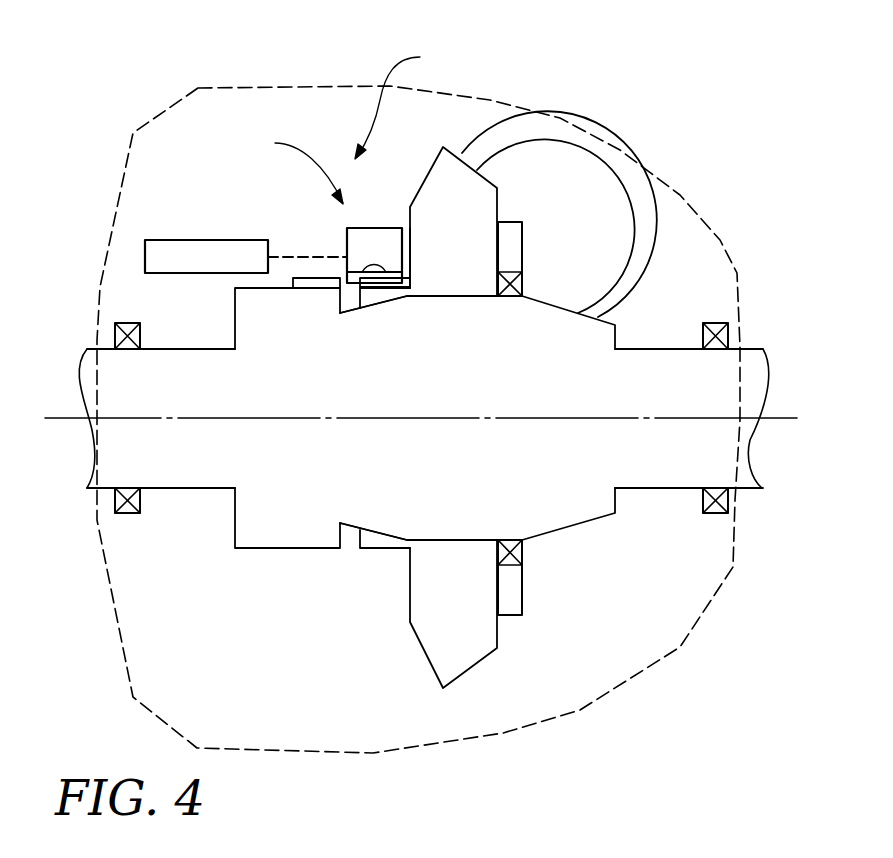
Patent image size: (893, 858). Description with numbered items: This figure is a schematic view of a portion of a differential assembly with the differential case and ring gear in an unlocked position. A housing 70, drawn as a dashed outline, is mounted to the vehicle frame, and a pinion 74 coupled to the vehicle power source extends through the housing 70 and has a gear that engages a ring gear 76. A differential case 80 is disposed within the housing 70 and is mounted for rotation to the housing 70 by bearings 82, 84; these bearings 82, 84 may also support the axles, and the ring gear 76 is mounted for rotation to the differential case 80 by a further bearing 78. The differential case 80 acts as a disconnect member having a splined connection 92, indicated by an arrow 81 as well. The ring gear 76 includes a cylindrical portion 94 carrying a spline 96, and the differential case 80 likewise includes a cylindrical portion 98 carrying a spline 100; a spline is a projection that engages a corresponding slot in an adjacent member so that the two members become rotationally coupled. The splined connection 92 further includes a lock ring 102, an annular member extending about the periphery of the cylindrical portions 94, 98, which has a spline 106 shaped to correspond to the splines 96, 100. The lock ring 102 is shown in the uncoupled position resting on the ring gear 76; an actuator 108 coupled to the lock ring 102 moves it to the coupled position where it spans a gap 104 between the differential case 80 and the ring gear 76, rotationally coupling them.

The housing 70 is at (295, 85).
The pinion 74 is at (590, 166).
The ring gear 76 is at (425, 655).
The bearing 78 is at (525, 555).
The differential case 80 is at (572, 525).
The direction arrow 81 is at (406, 101).
The bearing 82 is at (122, 525).
The bearing 84 is at (718, 518).
The splined connection 92 is at (291, 167).
The cylindrical portion 94 is at (377, 297).
The spline 96 is at (412, 258).
The cylindrical portion 98 is at (315, 300).
The spline 100 is at (305, 287).
The gap 104 is at (352, 300).
The lock ring 102 is at (392, 228).
The spline 106 is at (373, 272).
The actuator 108 is at (200, 240).